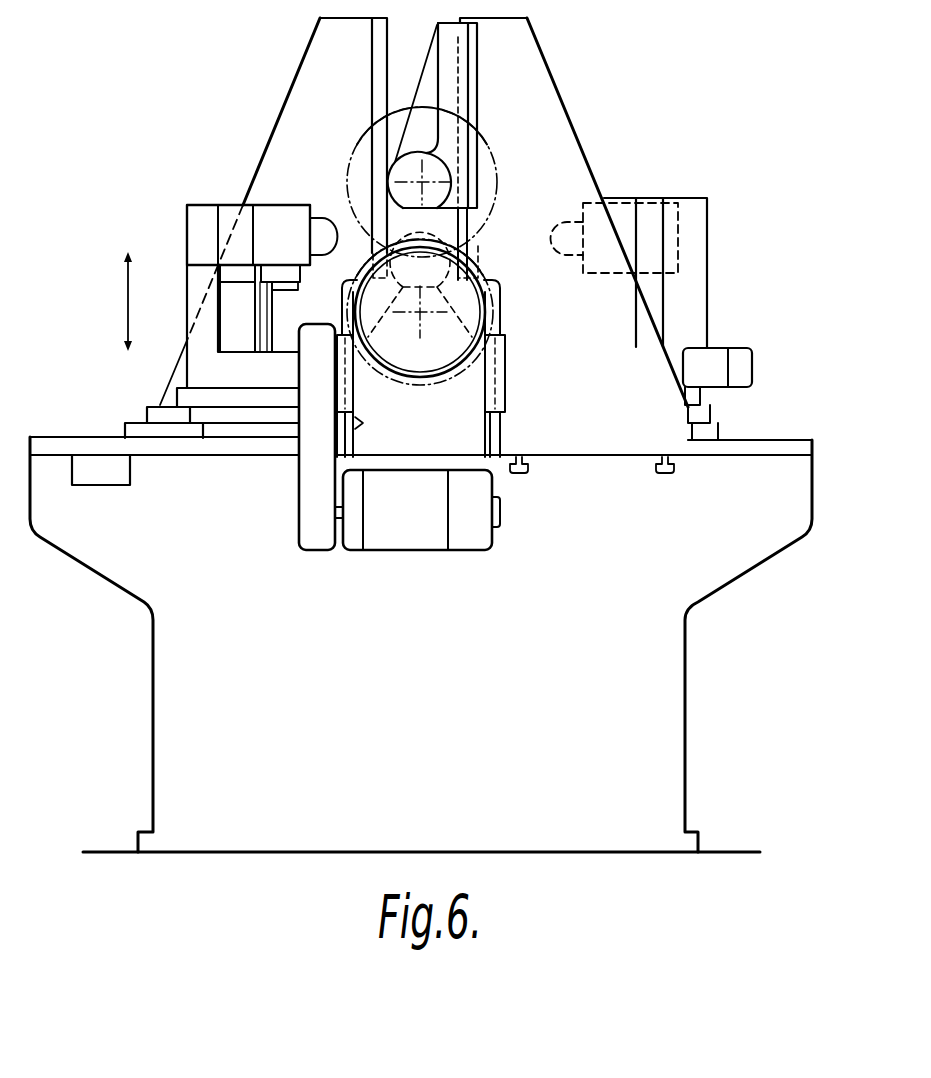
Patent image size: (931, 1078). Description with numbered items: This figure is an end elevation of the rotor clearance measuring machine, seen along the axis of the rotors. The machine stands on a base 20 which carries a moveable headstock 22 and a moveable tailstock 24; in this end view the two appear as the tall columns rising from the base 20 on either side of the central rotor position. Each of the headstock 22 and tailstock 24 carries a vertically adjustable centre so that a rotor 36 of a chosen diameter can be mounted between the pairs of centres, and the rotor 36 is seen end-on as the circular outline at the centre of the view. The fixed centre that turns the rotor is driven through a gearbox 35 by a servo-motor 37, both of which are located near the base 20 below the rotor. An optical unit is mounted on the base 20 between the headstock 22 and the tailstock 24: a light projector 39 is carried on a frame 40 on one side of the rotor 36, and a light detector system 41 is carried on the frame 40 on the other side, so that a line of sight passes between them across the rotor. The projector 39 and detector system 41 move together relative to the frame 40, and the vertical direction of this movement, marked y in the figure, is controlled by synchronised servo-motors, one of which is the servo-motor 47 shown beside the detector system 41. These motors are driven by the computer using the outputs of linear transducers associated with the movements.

The base 20 is at (434, 740).
The headstock 22 is at (545, 60).
The tailstock 24 is at (296, 80).
The gearbox 35 is at (357, 426).
The rotor 36 is at (482, 143).
The servo-motor 37 is at (473, 551).
The light projector 39 is at (215, 185).
The frame 40 is at (217, 372).
The light detector system 41 is at (669, 184).
The servo-motor 47 is at (722, 348).